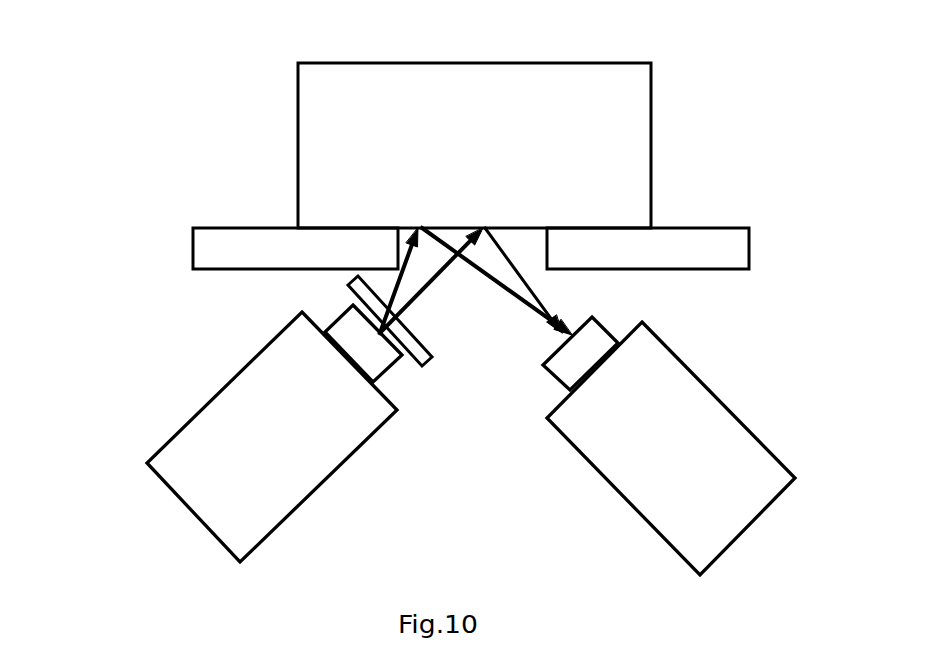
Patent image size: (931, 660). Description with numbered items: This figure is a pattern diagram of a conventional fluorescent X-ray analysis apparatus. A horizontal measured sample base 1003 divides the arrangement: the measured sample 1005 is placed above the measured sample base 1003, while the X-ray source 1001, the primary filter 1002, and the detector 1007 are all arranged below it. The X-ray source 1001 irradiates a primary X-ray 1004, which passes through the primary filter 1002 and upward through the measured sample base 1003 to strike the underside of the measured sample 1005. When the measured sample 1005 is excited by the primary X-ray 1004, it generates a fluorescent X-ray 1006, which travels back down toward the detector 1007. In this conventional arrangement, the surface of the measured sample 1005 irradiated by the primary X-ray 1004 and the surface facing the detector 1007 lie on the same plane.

The X-ray source 1001 is at (215, 454).
The primary filter 1002 is at (362, 290).
The measured sample base 1003 is at (572, 239).
The primary X-ray 1004 is at (412, 297).
The measured sample 1005 is at (370, 100).
The fluorescent X-ray 1006 is at (502, 287).
The detector 1007 is at (706, 459).